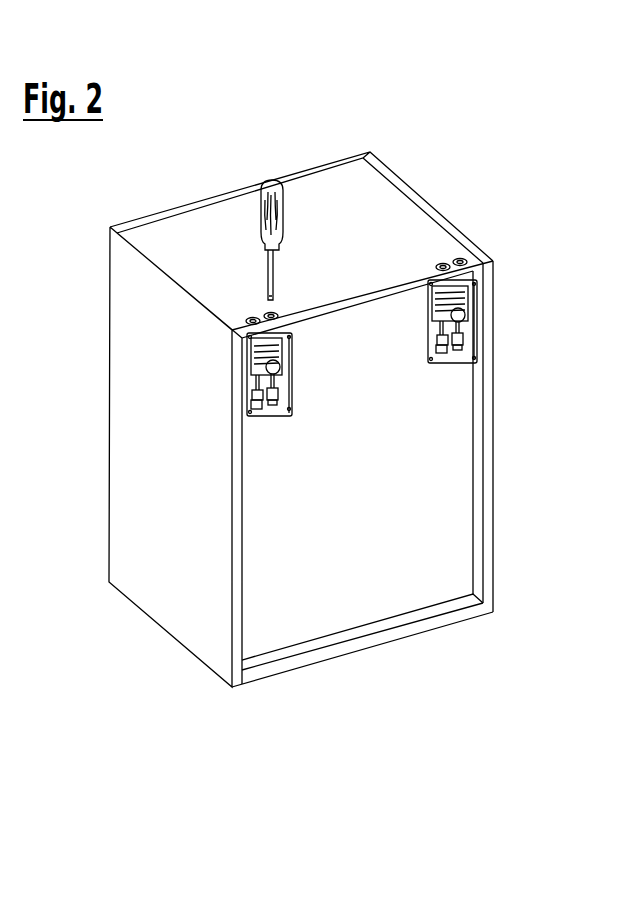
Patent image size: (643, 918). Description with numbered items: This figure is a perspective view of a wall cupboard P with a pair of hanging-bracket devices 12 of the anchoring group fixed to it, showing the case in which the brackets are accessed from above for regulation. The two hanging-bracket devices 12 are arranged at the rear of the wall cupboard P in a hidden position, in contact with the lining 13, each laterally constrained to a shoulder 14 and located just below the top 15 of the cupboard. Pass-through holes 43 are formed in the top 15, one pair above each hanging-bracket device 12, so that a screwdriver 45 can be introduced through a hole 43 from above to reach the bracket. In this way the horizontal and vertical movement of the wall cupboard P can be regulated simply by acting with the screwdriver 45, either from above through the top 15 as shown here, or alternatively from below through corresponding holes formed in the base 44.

The hanging-bracket device 12 is at (263, 432).
The lining 13 is at (373, 452).
The shoulder 14 is at (187, 477).
The top 15 is at (398, 238).
The pass-through hole 43 is at (255, 318).
The base 44 is at (372, 650).
The screwdriver 45 is at (272, 187).
The wall cupboard P is at (418, 173).